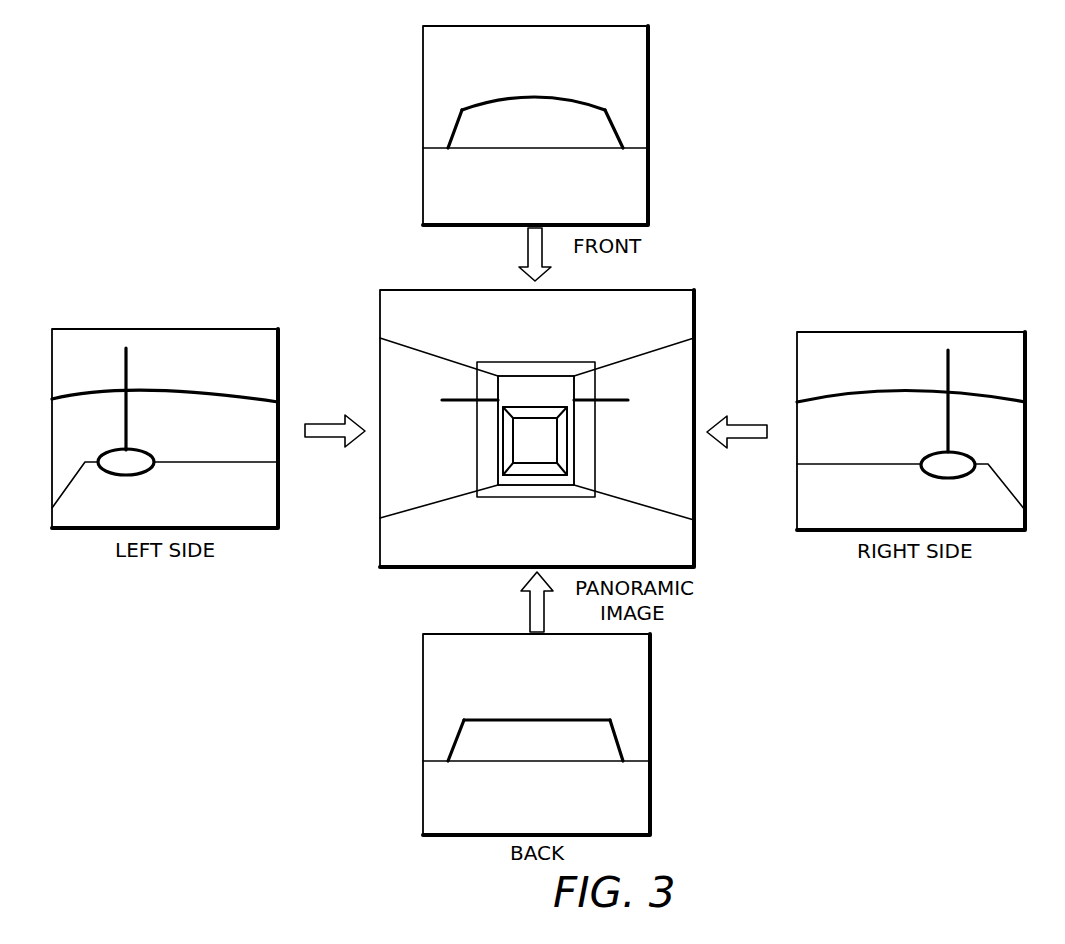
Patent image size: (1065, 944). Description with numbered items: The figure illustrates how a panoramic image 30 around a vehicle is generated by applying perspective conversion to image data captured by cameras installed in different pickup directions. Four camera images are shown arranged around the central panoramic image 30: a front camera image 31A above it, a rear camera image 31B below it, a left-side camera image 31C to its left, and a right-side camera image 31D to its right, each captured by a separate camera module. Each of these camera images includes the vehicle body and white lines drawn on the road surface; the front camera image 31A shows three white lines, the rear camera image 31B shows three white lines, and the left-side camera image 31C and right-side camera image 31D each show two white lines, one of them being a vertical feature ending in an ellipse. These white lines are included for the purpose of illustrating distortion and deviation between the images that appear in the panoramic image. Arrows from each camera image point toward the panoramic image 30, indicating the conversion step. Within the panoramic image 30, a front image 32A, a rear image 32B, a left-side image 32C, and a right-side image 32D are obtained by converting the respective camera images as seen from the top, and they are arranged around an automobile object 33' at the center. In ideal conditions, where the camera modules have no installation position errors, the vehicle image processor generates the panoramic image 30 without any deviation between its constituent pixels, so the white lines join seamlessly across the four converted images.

The panoramic image 30 is at (677, 291).
The front camera image 31A is at (650, 105).
The rear camera image 31B is at (652, 721).
The left-side camera image 31C is at (61, 329).
The right-side camera image 31D is at (812, 332).
The front image 32A is at (392, 313).
The rear image 32B is at (392, 545).
The left-side image 32C is at (392, 481).
The right-side image 32D is at (684, 487).
The automobile object 33' is at (536, 411).